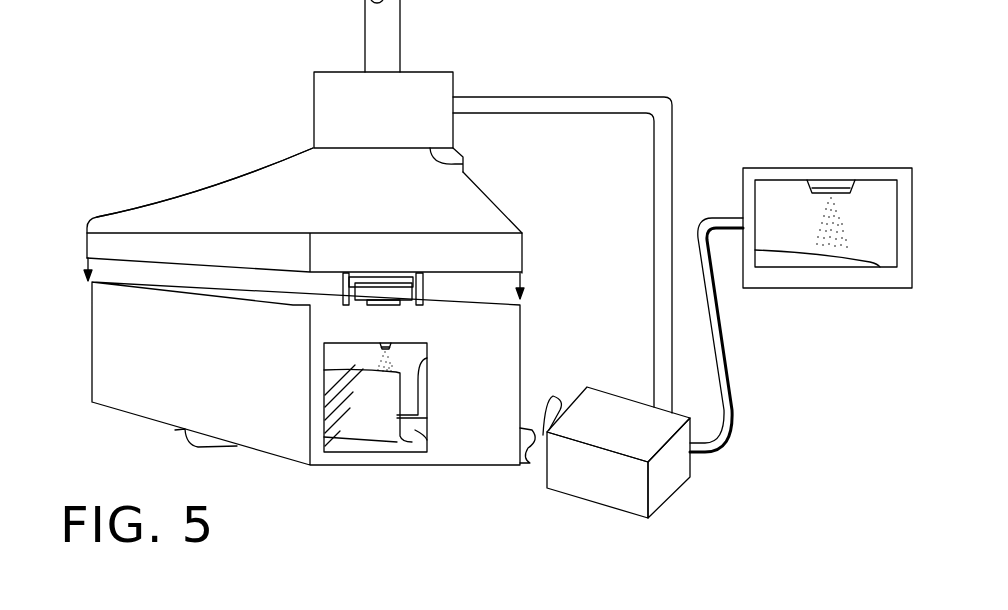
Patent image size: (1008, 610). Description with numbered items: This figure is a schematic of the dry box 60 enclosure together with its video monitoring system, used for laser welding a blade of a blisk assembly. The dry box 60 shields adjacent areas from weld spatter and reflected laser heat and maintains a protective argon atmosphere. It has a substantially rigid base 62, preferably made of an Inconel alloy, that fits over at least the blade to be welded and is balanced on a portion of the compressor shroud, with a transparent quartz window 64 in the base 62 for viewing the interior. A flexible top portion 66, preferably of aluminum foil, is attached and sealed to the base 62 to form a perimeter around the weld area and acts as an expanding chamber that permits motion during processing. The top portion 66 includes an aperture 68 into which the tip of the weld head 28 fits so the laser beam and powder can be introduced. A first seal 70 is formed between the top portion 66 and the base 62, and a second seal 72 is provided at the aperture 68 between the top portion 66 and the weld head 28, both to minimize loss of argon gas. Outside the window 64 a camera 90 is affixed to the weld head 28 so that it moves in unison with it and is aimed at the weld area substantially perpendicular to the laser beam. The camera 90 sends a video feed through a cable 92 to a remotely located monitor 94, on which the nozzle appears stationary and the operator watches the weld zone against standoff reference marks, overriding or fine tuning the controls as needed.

The weld head 28 is at (433, 72).
The dry box 60 is at (540, 225).
The base 62 is at (92, 380).
The window 64 is at (325, 356).
The top portion 66 is at (488, 197).
The aperture 68 is at (325, 147).
The first seal 70 is at (498, 305).
The second seal 72 is at (455, 164).
The camera 90 is at (613, 488).
The cable 92 is at (724, 358).
The monitor 94 is at (870, 168).